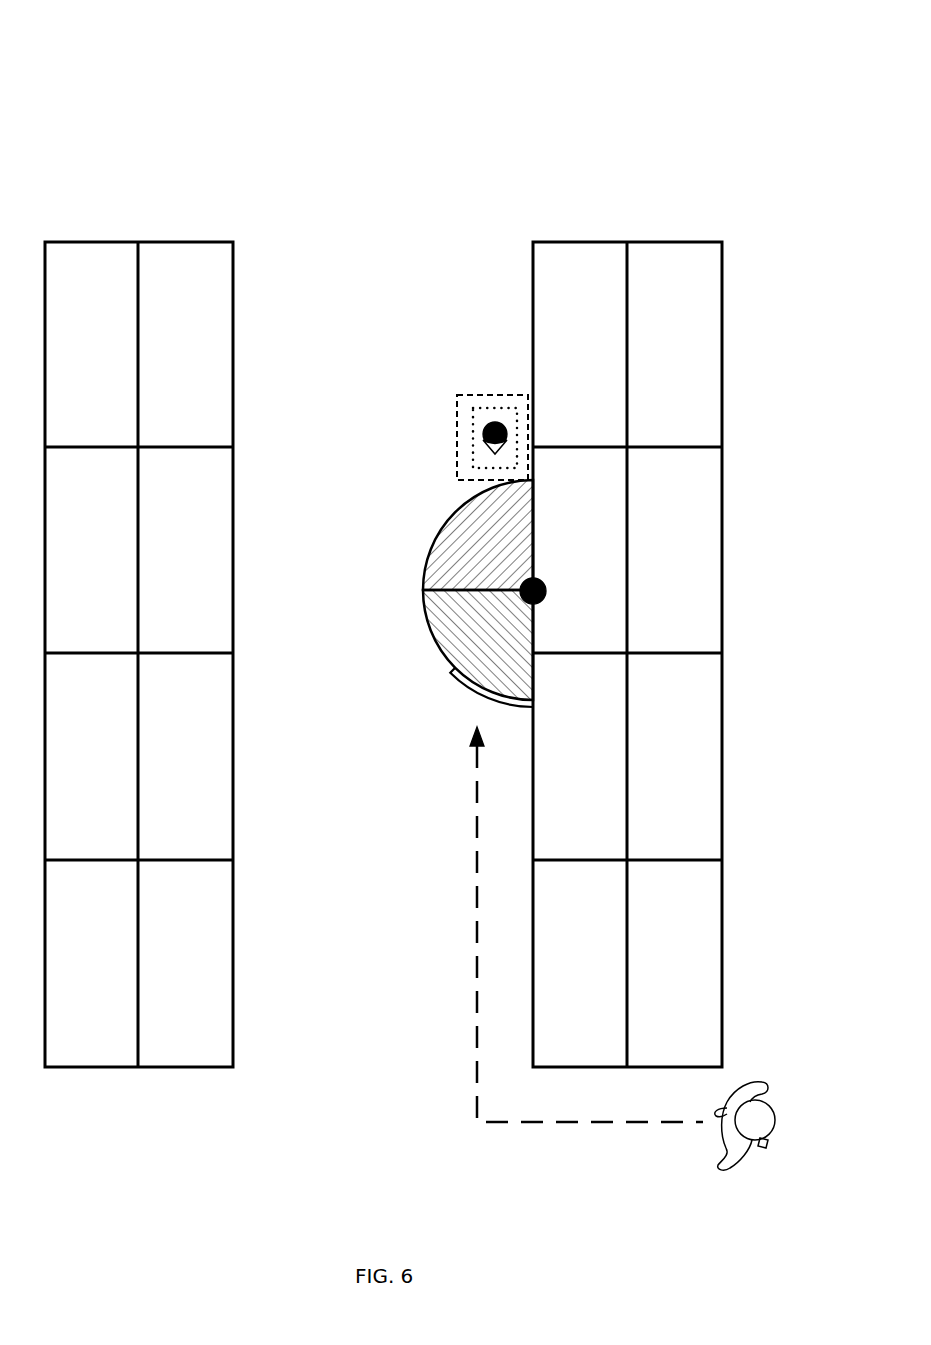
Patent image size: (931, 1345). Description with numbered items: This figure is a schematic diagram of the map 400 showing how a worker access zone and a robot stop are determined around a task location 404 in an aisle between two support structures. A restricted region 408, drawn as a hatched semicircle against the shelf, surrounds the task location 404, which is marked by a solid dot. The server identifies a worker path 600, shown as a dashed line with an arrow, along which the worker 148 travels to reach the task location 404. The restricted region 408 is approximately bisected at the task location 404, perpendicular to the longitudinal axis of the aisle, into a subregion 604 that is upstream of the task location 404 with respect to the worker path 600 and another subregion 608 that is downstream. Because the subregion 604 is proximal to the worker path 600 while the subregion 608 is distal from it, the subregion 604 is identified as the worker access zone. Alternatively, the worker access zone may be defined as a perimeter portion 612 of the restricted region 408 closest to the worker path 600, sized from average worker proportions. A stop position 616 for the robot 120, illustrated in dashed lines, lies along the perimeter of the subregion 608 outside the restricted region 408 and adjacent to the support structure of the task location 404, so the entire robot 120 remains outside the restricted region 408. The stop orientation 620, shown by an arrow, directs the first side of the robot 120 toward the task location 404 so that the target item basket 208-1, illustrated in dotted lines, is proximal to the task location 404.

The map 400 is at (530, 104).
The robot 120 is at (513, 382).
The stop position 616 is at (492, 421).
The stop orientation 620 is at (480, 453).
The subregion 604 is at (446, 503).
The subregion 608 is at (428, 643).
The restricted region 408 is at (436, 563).
The target item basket 208-1 is at (513, 452).
The task location 404 is at (548, 582).
The perimeter portion 612 is at (478, 692).
The worker path 600 is at (477, 1080).
The worker 148 is at (740, 1168).